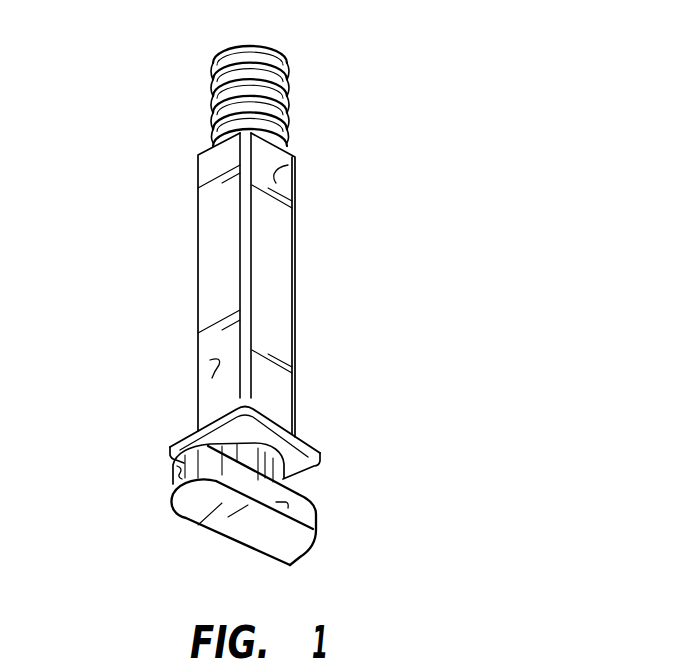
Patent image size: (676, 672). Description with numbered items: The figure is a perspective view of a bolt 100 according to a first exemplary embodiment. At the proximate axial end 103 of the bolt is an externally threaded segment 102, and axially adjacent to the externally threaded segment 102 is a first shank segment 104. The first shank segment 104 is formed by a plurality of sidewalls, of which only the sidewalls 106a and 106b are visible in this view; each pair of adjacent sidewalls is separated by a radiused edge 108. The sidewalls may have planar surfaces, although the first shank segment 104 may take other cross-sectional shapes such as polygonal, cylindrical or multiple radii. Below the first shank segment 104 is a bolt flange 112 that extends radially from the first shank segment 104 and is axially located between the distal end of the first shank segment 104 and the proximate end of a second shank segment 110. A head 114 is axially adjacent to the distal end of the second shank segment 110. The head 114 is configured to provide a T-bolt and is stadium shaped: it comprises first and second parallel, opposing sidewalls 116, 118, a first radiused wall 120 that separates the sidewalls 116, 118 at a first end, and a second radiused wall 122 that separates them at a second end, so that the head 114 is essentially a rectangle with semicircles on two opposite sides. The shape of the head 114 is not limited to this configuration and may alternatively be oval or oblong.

The bolt 100 is at (412, 108).
The externally threaded segment 102 is at (212, 94).
The proximate axial end 103 is at (220, 52).
The first shank segment 104 is at (196, 249).
The sidewall 106a is at (288, 165).
The sidewall 106b is at (210, 360).
The radiused edge 108 is at (257, 290).
The second shank segment 110 is at (283, 469).
The bolt flange 112 is at (318, 450).
The head 114 is at (233, 545).
The first parallel/opposing sidewall 116 is at (285, 509).
The second parallel/opposing sidewall 118 is at (177, 517).
The first radiused wall 120 is at (318, 520).
The second radiused wall 122 is at (176, 467).